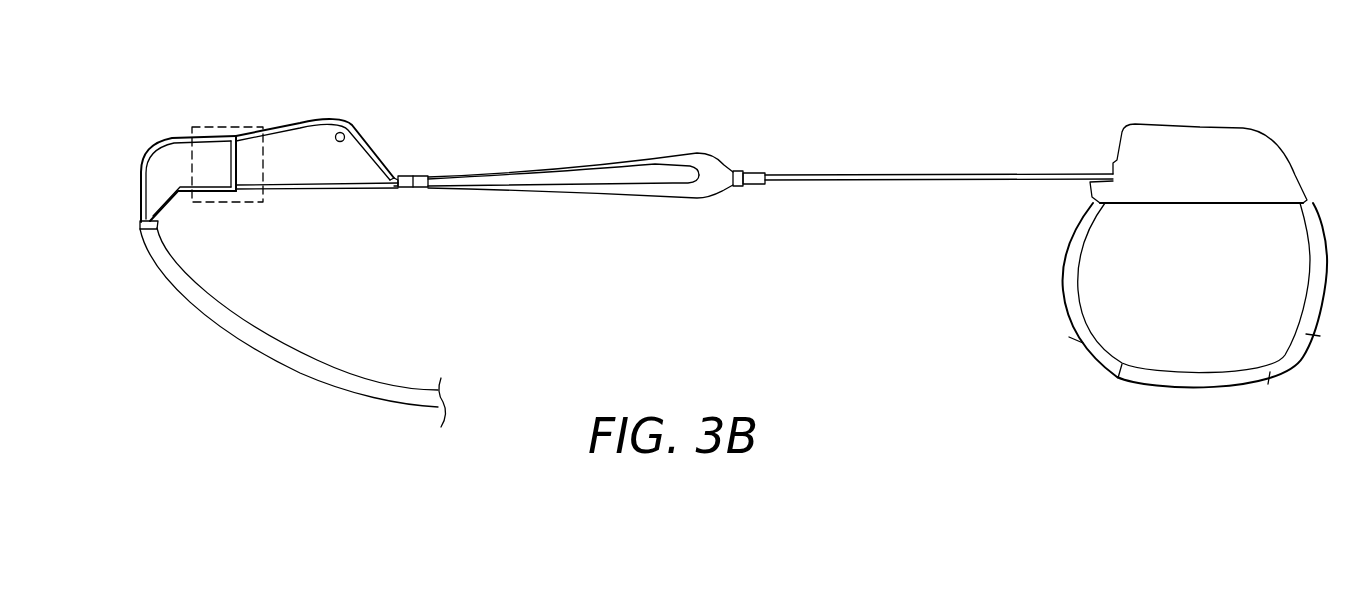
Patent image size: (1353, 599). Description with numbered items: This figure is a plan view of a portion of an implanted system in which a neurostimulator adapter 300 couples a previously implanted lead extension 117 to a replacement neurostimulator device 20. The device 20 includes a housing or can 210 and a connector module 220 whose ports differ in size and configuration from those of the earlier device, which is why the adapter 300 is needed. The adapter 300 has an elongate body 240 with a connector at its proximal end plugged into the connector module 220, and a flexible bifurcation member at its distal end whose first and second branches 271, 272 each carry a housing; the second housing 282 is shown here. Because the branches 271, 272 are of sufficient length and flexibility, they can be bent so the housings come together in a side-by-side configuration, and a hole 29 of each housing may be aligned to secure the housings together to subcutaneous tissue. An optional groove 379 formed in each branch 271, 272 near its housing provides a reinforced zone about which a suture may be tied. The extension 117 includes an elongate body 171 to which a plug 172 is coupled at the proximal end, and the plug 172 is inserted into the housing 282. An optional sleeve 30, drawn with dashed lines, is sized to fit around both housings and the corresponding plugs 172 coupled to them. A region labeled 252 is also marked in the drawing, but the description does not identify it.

The lead extension 117 is at (127, 194).
The elongate body 171 is at (182, 295).
The plug 172 is at (192, 155).
The optional sleeve 30 is at (217, 127).
The hole 29 is at (345, 132).
The frame end portion 252 is at (333, 171).
The second housing 282 is at (268, 172).
The groove 379 is at (420, 176).
The first branch 271 is at (535, 175).
The second branch 272 is at (522, 188).
The neurostimulator adapter 300 is at (787, 124).
The elongate body 240 is at (900, 180).
The connector module 220 is at (1192, 138).
The neurostimulator device 20 is at (1261, 115).
The housing or can 210 is at (1112, 325).